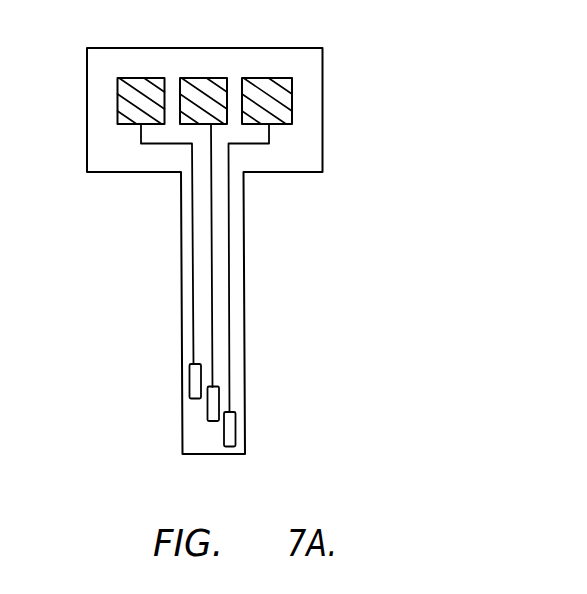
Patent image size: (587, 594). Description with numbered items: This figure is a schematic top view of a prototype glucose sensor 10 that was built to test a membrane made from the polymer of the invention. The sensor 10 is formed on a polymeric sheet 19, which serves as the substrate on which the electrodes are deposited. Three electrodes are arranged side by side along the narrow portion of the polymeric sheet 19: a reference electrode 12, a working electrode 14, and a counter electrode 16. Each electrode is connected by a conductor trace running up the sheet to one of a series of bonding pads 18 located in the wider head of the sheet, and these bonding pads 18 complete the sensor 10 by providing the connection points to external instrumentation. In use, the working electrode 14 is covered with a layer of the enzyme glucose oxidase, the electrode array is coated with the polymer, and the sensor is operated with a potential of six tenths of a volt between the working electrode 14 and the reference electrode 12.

The glucose sensor 10 is at (180, 227).
The reference electrode 12 is at (190, 380).
The working electrode 14 is at (208, 408).
The counter electrode 16 is at (236, 436).
The bonding pads 18 is at (148, 78).
The polymeric sheet 19 is at (244, 342).